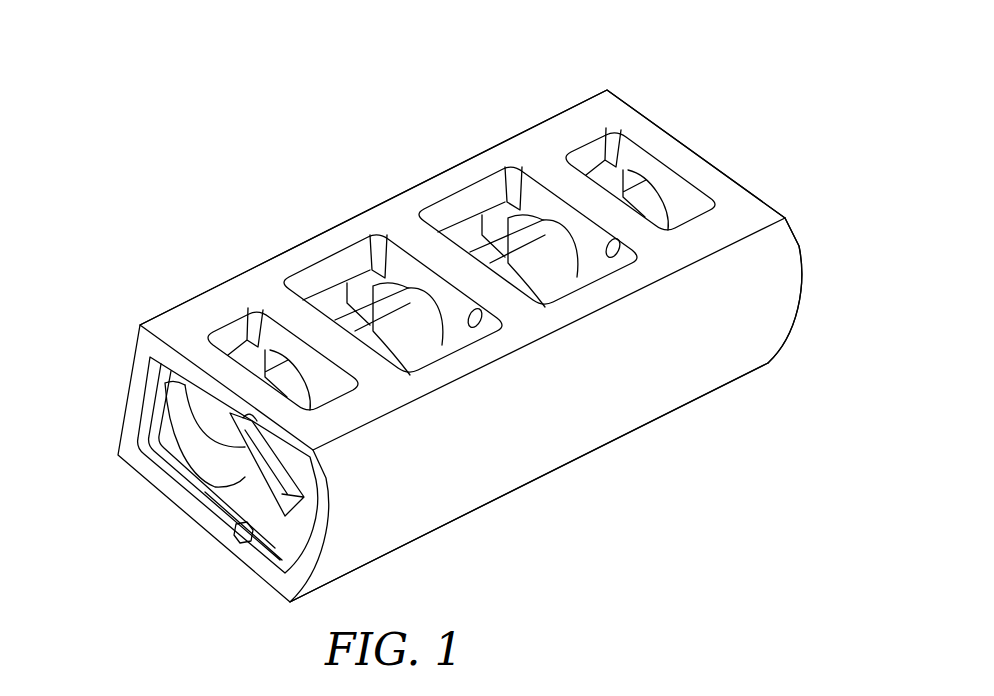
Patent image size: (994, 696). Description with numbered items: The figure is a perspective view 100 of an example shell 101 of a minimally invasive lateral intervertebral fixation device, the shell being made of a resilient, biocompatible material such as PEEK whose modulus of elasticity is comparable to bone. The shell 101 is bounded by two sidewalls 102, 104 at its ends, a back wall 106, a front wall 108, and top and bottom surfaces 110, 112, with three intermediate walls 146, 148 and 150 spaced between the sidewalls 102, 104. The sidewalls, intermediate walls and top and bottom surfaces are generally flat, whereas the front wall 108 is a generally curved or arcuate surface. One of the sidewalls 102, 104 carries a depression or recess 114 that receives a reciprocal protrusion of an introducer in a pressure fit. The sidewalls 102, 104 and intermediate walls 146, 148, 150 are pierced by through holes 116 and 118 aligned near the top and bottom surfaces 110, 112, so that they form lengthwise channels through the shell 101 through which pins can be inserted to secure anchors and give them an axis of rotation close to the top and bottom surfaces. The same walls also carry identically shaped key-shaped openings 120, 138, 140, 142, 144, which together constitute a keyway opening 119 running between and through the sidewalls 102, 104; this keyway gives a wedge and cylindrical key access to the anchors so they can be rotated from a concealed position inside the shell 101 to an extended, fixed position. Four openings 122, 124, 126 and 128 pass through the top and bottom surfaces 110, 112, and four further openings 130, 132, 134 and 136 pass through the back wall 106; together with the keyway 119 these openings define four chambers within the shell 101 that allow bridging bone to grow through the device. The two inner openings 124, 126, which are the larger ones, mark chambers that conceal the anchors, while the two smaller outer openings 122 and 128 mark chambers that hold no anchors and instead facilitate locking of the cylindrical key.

The perspective view 100 is at (212, 108).
The shell 101 is at (610, 88).
The sidewall 102 is at (270, 572).
The sidewall 104 is at (678, 140).
The back wall 106 is at (238, 273).
The front wall 108 is at (567, 443).
The top surface 110 is at (390, 217).
The bottom surface 112 is at (483, 505).
The recess 114 is at (238, 505).
The through hole 116 is at (232, 527).
The through hole 118 is at (262, 422).
The keyway opening 119 is at (172, 452).
The key-shaped opening 120 is at (193, 408).
The opening 122 is at (235, 323).
The opening 124 is at (341, 270).
The opening 126 is at (482, 200).
The opening 128 is at (597, 148).
The opening 130 is at (228, 345).
The opening 132 is at (323, 310).
The opening 134 is at (468, 242).
The opening 136 is at (600, 180).
The key-shaped opening 138 is at (298, 391).
The key-shaped opening 140 is at (434, 325).
The key-shaped opening 142 is at (569, 255).
The key-shaped opening 144 is at (649, 200).
The intermediate wall 146 is at (383, 380).
The intermediate wall 148 is at (508, 307).
The intermediate wall 150 is at (640, 233).